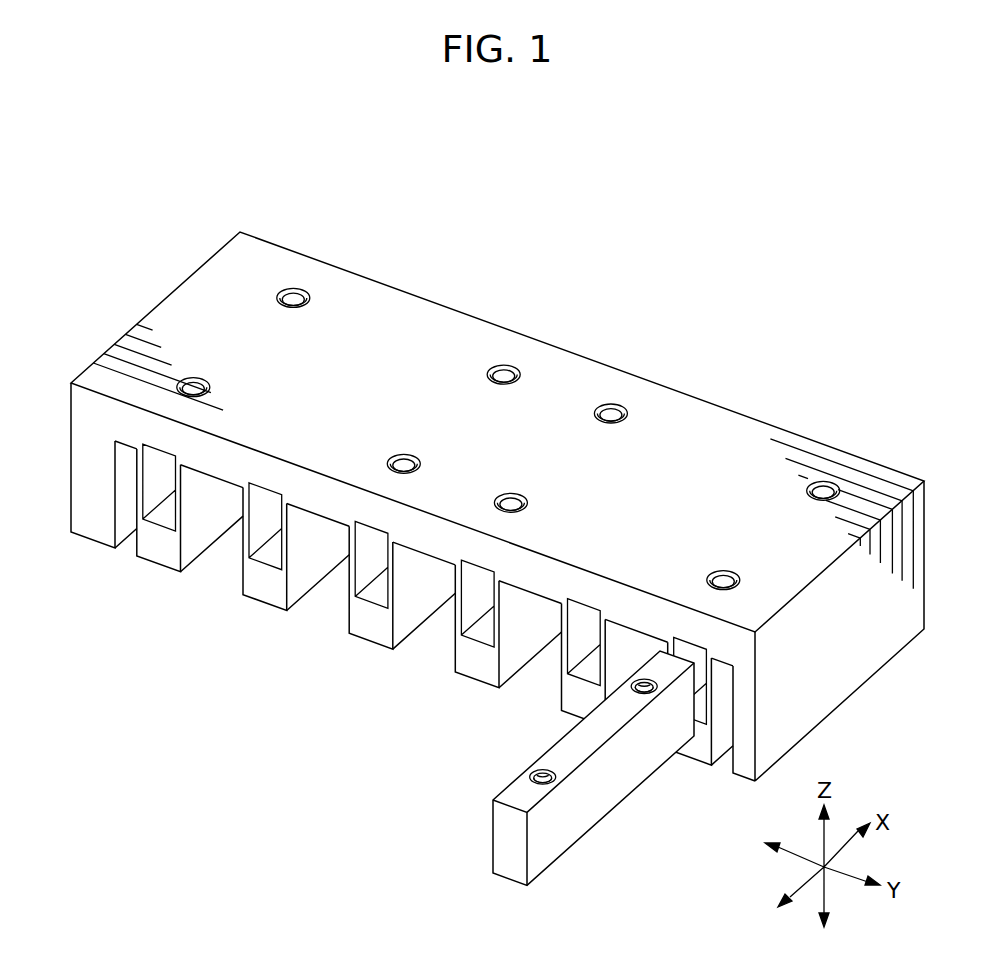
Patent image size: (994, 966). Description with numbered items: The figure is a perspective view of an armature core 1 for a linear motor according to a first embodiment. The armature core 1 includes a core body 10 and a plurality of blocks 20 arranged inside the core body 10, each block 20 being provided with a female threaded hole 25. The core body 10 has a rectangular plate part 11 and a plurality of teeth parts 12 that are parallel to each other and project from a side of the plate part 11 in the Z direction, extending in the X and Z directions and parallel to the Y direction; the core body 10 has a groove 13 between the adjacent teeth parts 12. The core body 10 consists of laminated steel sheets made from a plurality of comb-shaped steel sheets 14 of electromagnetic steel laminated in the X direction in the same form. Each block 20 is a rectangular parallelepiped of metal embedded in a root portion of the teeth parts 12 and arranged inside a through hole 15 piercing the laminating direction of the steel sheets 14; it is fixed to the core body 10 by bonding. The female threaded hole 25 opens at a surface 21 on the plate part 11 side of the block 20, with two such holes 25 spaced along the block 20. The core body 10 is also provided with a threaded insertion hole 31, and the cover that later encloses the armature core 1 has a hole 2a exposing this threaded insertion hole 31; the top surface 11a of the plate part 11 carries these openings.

The armature core 1 is at (606, 282).
The core body 10 is at (387, 283).
The plate part 11 is at (330, 498).
The top surface of base 11a is at (447, 345).
The teeth part 12 is at (158, 548).
The groove 13 is at (220, 562).
The steel sheet 14 is at (120, 340).
The through hole 15 is at (160, 477).
The hole 2a is at (504, 365).
The threaded insertion hole 31 is at (293, 288).
The block 20 is at (541, 831).
The surface 21 is at (578, 745).
The female threaded hole 25 is at (644, 680).